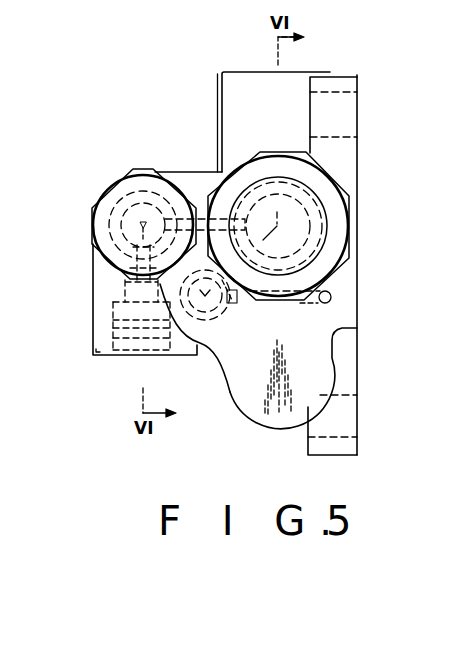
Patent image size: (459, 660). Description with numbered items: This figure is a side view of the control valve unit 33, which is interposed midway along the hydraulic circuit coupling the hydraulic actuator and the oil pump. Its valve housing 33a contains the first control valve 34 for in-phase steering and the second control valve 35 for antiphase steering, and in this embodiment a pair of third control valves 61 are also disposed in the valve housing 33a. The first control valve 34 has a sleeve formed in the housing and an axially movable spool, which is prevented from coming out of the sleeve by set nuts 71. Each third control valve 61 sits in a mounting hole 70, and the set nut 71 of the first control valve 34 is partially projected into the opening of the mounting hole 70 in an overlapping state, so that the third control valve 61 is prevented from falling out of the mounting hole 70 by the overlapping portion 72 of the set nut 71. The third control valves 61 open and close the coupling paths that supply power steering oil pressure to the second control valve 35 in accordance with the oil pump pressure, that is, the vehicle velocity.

The control valve unit 33 is at (224, 72).
The valve housing 33a is at (358, 83).
The first control valve 34 is at (332, 208).
The second control valve 35 is at (97, 212).
The third control valve 61 is at (232, 313).
The mounting hole 70 is at (233, 302).
The set nut 71 is at (340, 240).
The overlapping portion 72 is at (225, 273).